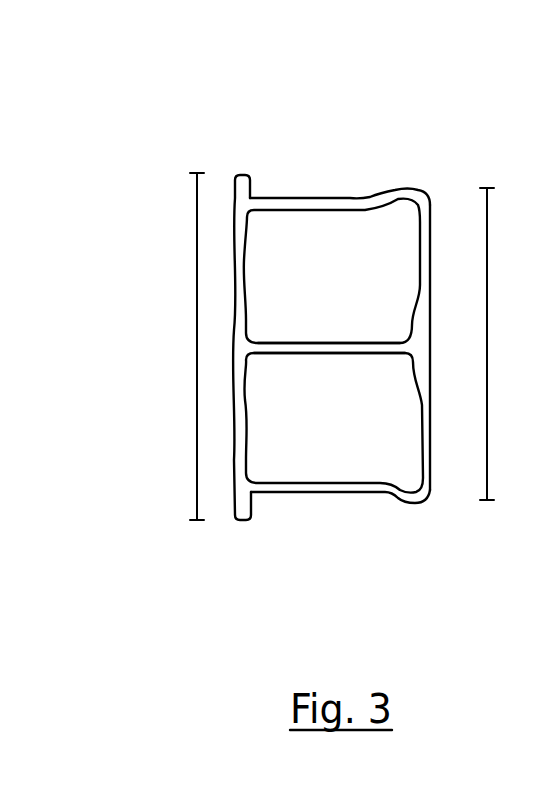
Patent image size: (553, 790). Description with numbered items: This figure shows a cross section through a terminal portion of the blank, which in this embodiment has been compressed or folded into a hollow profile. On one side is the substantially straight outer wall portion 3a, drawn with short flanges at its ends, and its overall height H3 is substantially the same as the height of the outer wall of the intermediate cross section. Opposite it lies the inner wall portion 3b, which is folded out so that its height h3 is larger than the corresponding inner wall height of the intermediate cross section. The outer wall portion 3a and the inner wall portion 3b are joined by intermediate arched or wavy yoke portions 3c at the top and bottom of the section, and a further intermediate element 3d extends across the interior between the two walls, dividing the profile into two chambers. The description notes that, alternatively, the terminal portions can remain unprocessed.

The outer wall portion 3a is at (230, 482).
The inner wall portion 3b is at (430, 228).
The yoke portions 3c is at (367, 196).
The intermediate web 3d is at (337, 342).
The height of the outer wall portion H3 is at (169, 346).
The height of the inner wall portion h3 is at (511, 344).